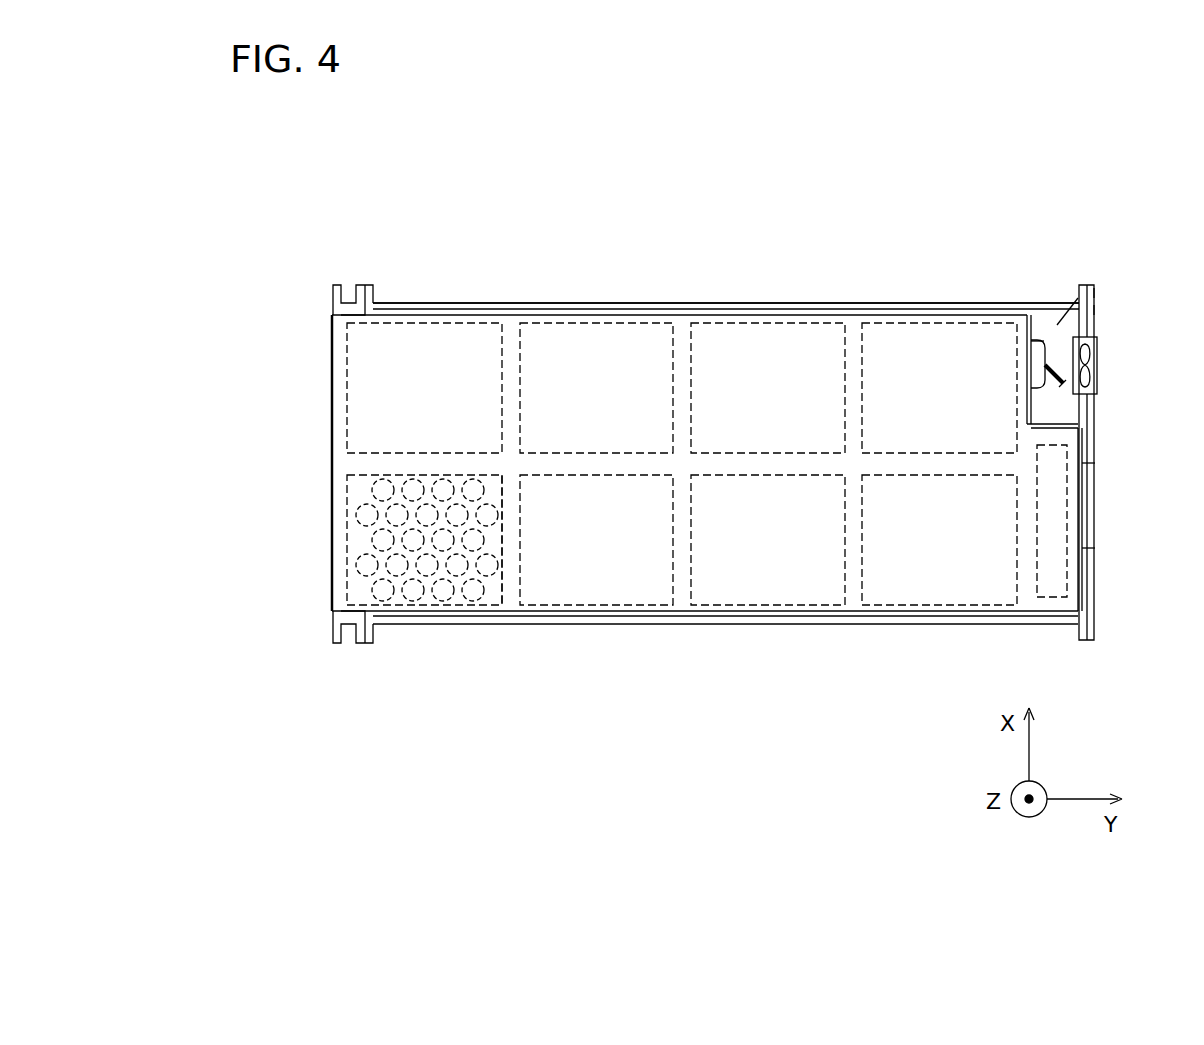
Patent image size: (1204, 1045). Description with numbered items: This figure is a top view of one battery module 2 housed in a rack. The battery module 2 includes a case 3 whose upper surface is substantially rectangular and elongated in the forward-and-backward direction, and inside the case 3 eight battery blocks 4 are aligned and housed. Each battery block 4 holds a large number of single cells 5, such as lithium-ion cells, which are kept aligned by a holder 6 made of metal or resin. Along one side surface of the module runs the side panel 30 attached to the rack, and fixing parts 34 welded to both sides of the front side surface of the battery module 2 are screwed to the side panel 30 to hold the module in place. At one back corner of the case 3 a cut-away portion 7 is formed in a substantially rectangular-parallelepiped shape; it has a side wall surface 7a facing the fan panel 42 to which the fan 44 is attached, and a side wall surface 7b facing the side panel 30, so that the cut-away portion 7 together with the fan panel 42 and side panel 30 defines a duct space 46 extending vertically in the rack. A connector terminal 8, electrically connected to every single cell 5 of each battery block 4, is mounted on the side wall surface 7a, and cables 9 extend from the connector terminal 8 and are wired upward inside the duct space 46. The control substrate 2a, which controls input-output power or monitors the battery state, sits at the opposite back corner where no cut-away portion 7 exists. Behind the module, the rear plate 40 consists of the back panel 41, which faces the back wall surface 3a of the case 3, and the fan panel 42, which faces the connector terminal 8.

The battery module 2 is at (331, 425).
The control substrate 2a is at (1067, 488).
The case 3 is at (773, 316).
The back wall surface 3a is at (1083, 548).
The battery block 4 is at (446, 604).
The single cell 5 is at (397, 605).
The holder 6 is at (506, 575).
The cut-away portion 7 is at (1035, 336).
The side wall surface 7a is at (1040, 394).
The side wall surface 7b is at (1046, 414).
The connector terminal 8 is at (1045, 341).
The cable 9 is at (1044, 378).
The side panel 30 is at (683, 303).
The fixing part 34 is at (331, 295).
The rear plate 40 is at (1095, 600).
The back panel 41 is at (1093, 522).
The fan panel 42 is at (1097, 310).
The fan 44 is at (1098, 362).
The duct space 46 is at (1098, 293).